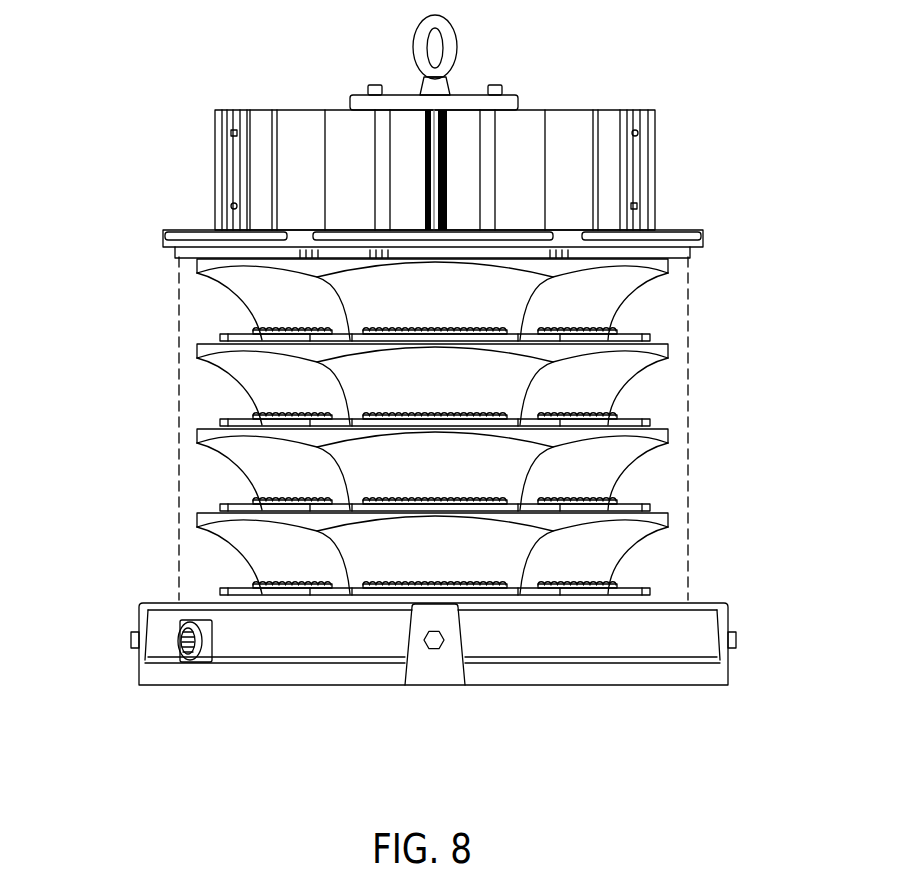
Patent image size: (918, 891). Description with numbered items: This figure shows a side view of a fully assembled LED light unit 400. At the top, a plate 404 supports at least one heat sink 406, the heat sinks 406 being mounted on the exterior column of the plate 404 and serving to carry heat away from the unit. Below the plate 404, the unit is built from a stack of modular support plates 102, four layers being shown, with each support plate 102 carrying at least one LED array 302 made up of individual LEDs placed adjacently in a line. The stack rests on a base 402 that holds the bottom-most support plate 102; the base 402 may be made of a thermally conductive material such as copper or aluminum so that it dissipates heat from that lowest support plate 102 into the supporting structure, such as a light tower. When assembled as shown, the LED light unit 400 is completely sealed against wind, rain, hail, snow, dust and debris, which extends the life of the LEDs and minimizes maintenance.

The LED light unit 400 is at (672, 70).
The heat sink 406 is at (262, 110).
The plate 404 is at (198, 230).
The support plate 102 is at (112, 571).
The LED array 302 is at (608, 327).
The base 402 is at (140, 660).